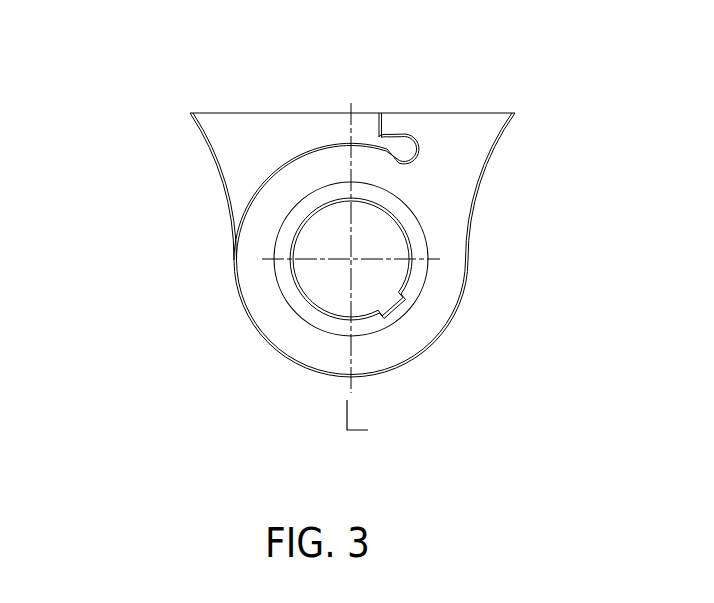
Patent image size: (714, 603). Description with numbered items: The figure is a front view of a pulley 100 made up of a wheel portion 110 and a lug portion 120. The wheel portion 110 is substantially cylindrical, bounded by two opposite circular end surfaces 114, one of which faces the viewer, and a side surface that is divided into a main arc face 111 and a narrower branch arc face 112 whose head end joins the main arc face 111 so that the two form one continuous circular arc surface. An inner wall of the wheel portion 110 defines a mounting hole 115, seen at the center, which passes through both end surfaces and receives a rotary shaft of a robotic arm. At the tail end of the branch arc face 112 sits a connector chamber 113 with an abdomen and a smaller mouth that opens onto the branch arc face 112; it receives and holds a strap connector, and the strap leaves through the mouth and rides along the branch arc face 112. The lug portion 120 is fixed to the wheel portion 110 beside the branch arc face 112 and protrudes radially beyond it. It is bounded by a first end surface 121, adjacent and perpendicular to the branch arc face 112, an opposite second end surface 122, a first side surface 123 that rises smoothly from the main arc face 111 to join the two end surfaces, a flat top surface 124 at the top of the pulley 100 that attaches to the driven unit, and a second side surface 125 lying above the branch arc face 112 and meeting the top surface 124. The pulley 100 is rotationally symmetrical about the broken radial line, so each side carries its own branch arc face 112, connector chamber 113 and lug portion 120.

The pulley 100 is at (389, 502).
The wheel portion 110 is at (119, 163).
The main arc face 111 is at (278, 352).
The branch arc face 112 is at (278, 171).
The connector chamber 113 is at (400, 155).
The circular end surface 114 is at (325, 348).
The mounting hole 115 is at (321, 275).
The lug portion 120 is at (595, 43).
The first end surface 121 is at (272, 137).
The second end surface 122 is at (467, 134).
The first side surface 123 is at (203, 135).
The top surface 124 is at (398, 112).
The second side surface 125 is at (378, 134).